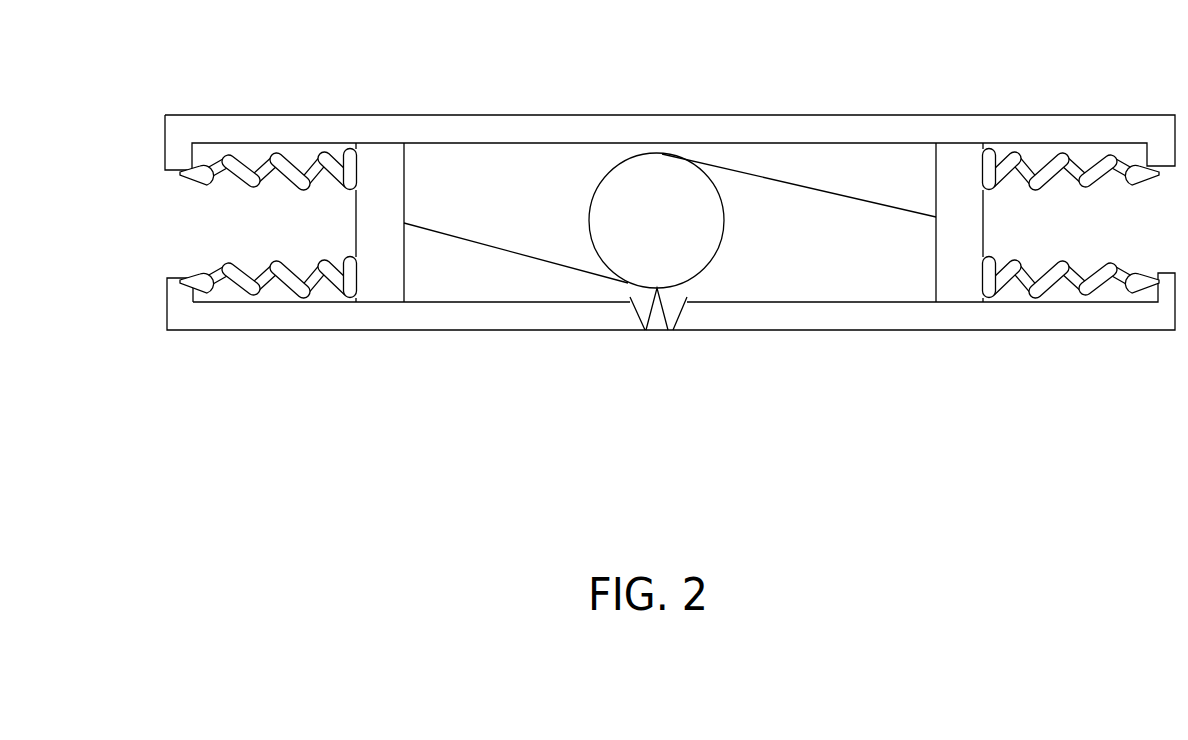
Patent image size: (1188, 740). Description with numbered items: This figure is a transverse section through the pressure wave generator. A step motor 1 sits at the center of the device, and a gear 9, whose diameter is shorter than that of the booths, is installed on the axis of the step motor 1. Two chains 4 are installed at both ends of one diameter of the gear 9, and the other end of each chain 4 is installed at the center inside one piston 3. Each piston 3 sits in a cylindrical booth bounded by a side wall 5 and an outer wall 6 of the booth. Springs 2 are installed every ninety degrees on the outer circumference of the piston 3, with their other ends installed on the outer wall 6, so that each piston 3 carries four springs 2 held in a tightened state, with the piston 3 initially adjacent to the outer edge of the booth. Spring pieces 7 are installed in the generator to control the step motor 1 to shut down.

The step motor 1 is at (657, 153).
The spring 2 is at (284, 155).
The piston 3 is at (378, 197).
The chain 4 is at (497, 245).
The side wall of the booth 5 is at (234, 138).
The outer wall of the booth 6 is at (174, 160).
The spring piece 7 is at (660, 332).
The gear 9 is at (673, 242).